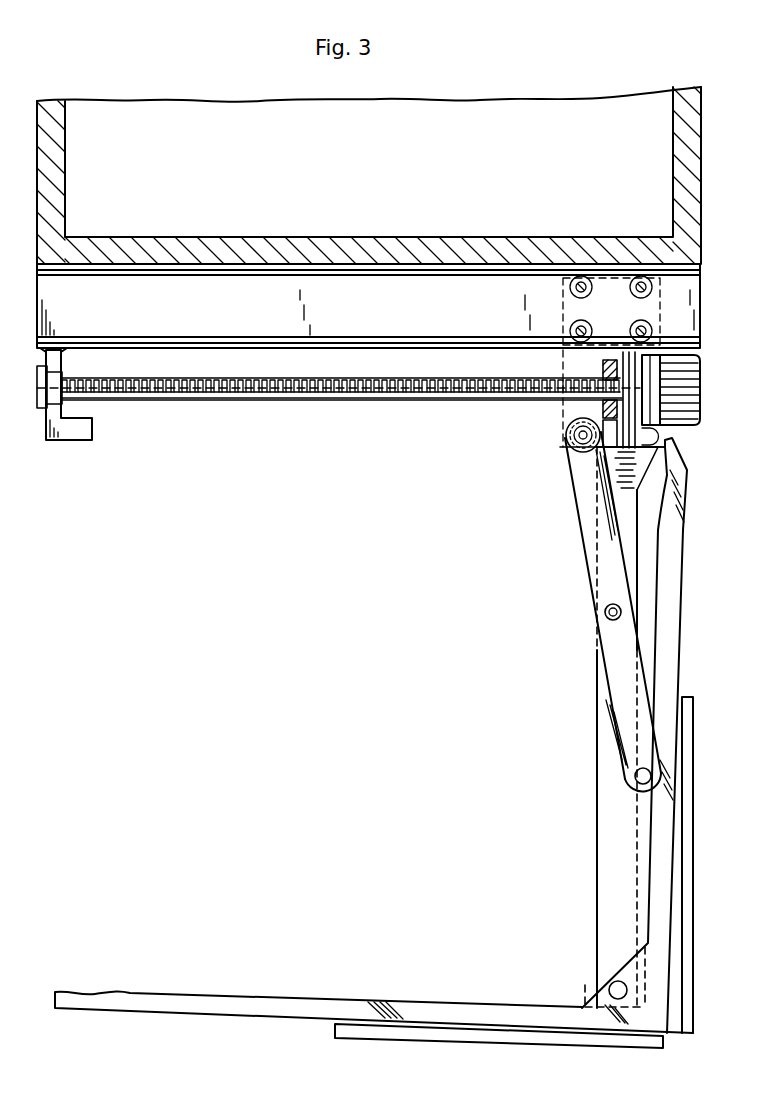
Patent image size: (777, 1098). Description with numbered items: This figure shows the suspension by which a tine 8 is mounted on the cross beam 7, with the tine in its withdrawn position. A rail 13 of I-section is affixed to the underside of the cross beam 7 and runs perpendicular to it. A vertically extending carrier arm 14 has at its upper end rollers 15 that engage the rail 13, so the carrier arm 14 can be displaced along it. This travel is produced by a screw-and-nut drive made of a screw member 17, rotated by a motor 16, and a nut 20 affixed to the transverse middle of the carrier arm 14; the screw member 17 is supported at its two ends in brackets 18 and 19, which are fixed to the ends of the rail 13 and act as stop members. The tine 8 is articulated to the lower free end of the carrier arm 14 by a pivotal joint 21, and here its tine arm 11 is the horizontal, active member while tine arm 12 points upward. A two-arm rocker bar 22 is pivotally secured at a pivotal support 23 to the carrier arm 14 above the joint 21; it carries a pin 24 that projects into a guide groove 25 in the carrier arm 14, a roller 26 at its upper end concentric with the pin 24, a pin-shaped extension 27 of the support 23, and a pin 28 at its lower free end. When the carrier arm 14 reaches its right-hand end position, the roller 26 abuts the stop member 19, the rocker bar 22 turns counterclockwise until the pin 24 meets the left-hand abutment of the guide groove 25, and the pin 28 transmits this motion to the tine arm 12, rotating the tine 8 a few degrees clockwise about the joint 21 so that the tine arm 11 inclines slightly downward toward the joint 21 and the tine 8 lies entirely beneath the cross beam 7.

The cross beam 7 is at (168, 113).
The tine 8 is at (531, 1000).
The tine arm 11 is at (245, 993).
The tine arm 12 is at (672, 598).
The rail 13 is at (196, 316).
The carrier arm 14 is at (597, 870).
The rollers 15 is at (628, 282).
The motor 16 is at (676, 355).
The screw member 17 is at (290, 402).
The bracket 18 is at (78, 441).
The bracket 19 is at (600, 460).
The nut 20 is at (603, 365).
The pivotal joint 21 is at (608, 989).
The rocker bar 22 is at (608, 683).
The pivotal support 23 is at (605, 612).
The pin 24 is at (582, 444).
The guide groove 25 is at (662, 448).
The roller 26 is at (569, 429).
The pin-shaped extension 27 is at (611, 621).
The pin 28 is at (635, 777).